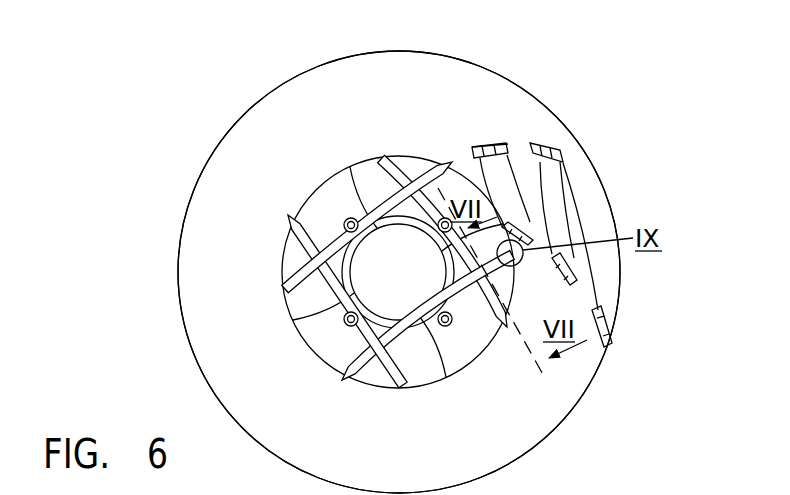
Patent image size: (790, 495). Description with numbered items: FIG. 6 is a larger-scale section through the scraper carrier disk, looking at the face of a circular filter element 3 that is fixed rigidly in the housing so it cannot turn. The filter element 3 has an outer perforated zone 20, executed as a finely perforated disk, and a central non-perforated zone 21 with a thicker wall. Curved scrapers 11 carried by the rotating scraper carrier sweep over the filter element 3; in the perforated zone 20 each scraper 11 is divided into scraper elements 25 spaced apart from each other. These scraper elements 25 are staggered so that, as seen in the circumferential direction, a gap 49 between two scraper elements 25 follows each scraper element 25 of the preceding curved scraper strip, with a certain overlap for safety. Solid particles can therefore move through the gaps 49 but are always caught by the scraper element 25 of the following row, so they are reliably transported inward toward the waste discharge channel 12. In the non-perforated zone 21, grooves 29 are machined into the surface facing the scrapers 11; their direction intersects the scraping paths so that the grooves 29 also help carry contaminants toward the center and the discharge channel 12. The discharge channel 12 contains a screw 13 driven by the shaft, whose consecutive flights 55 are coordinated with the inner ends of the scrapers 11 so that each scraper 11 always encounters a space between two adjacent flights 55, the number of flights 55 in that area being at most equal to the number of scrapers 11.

The filter element 3 is at (176, 328).
The perforated zone 20 is at (276, 124).
The non-perforated zone 21 is at (320, 205).
The scraper 11 is at (420, 156).
The waste discharge channel 12 is at (380, 287).
The screw 13 is at (413, 322).
The scraper element 25 is at (553, 146).
The groove 29 is at (290, 270).
The gap 49 is at (514, 132).
The flight 55 is at (350, 167).